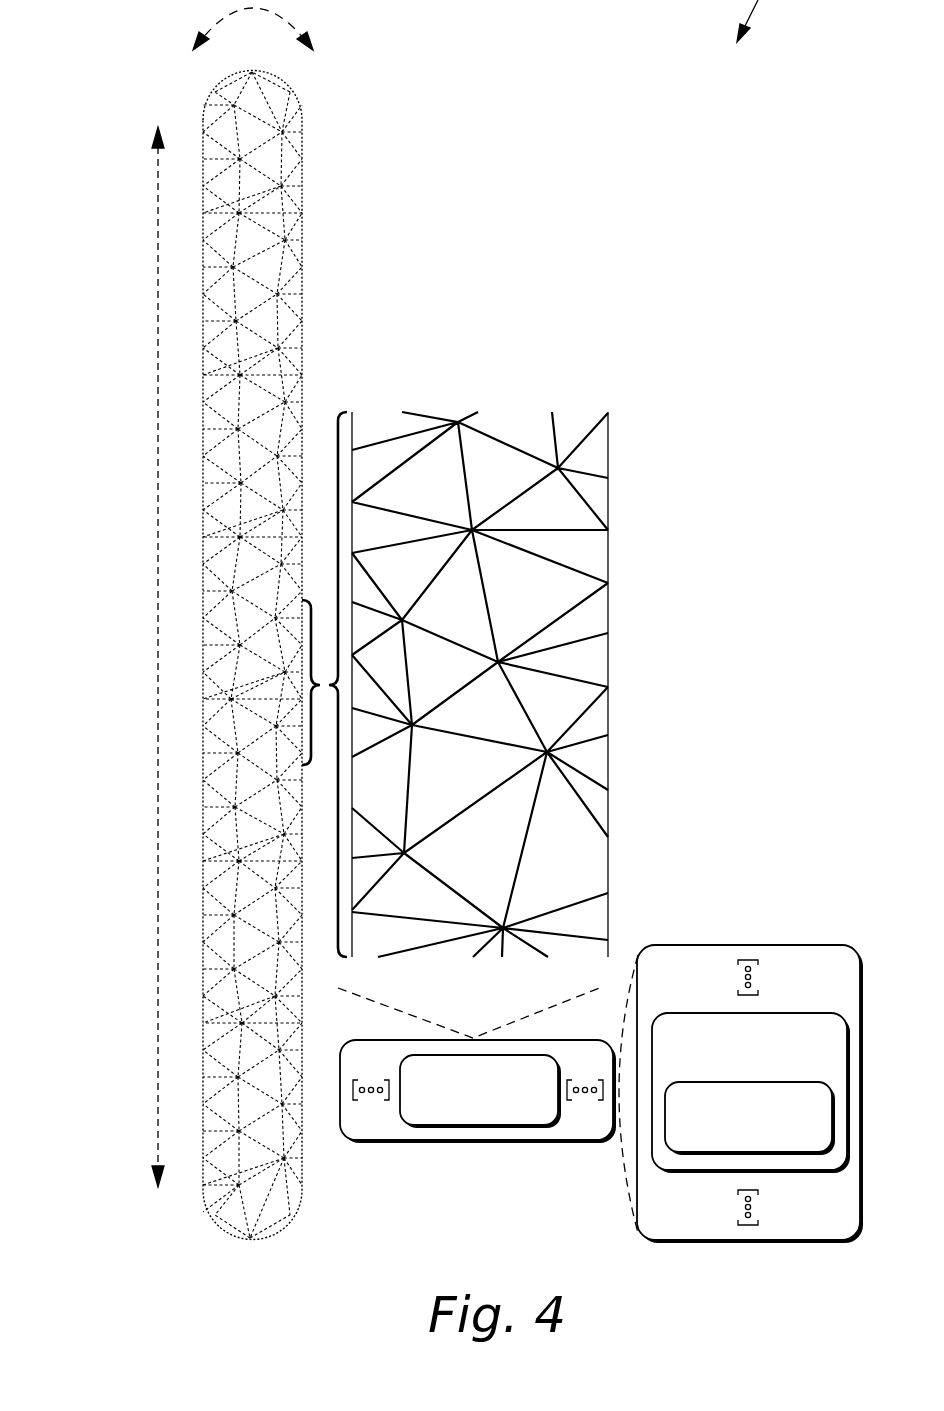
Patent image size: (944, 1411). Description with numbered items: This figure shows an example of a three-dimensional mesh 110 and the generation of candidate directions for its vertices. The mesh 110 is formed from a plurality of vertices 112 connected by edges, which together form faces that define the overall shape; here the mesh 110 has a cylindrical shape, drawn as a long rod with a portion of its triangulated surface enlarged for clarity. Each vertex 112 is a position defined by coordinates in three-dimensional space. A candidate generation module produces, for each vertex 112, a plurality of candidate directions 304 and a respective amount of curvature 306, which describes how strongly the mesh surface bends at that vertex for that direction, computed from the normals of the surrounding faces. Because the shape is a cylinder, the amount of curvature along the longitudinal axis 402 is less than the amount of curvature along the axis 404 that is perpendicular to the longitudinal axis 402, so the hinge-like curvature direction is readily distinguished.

The longitudinal axis 402 is at (157, 127).
The axis perpendicular to the longitudinal axis 404 is at (316, 36).
The 3D mesh 110 is at (303, 195).
The vertices 112 is at (478, 1091).
The candidate directions 304 is at (751, 1093).
The amount of curvature 306 is at (750, 1118).